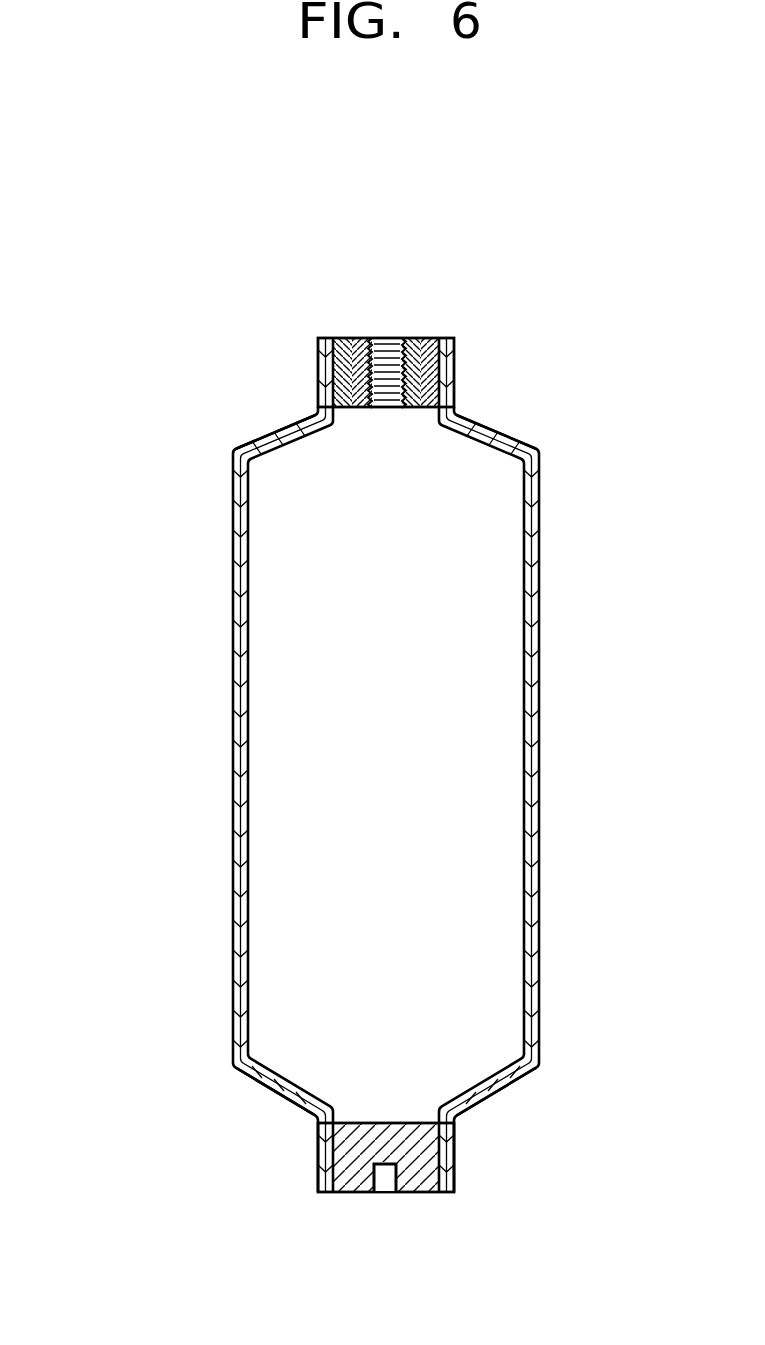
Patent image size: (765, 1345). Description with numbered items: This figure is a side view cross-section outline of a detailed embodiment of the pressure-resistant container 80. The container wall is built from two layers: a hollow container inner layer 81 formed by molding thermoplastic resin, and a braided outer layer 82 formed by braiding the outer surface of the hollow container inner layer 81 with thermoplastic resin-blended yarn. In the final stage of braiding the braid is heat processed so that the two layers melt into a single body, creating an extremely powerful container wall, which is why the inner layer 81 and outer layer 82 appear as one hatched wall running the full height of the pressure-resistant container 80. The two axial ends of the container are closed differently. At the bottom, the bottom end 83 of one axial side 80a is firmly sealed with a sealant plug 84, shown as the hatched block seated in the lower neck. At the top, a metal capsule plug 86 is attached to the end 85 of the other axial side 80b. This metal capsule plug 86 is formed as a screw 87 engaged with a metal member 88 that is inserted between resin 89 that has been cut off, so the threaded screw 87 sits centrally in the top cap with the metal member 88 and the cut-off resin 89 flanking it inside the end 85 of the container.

The pressure-resistant container 80 is at (190, 616).
The axial side 80a is at (272, 1094).
The other axial side 80b is at (283, 429).
The hollow container inner layer 81 is at (530, 587).
The braided outer layer 82 is at (532, 793).
The bottom end 83 is at (322, 1192).
The sealant plug 84 is at (413, 1185).
The end 85 is at (450, 338).
The metal capsule plug 86 is at (387, 288).
The screw 87 is at (387, 340).
The metal member 88 is at (410, 340).
The resin 89 is at (444, 325).